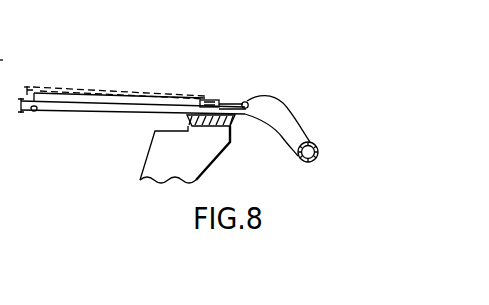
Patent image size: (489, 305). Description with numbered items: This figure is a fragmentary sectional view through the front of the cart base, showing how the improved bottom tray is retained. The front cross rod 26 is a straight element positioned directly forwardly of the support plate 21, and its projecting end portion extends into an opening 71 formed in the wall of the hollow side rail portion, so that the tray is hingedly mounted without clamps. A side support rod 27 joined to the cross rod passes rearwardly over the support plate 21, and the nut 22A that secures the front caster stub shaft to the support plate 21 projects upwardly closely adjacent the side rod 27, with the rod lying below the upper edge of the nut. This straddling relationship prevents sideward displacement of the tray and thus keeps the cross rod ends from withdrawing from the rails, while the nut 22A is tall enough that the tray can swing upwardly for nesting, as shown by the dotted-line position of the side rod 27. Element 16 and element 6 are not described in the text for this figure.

The tube 16 is at (61, 117).
The side support rod 27 is at (55, 84).
The nut 22A is at (210, 101).
The opening 71 is at (246, 102).
The front cross rod 26 is at (250, 103).
The support plate 21 is at (213, 127).
The frame member 6 is at (8, 122).